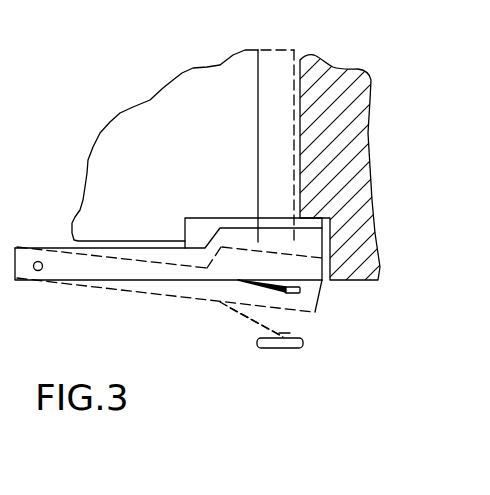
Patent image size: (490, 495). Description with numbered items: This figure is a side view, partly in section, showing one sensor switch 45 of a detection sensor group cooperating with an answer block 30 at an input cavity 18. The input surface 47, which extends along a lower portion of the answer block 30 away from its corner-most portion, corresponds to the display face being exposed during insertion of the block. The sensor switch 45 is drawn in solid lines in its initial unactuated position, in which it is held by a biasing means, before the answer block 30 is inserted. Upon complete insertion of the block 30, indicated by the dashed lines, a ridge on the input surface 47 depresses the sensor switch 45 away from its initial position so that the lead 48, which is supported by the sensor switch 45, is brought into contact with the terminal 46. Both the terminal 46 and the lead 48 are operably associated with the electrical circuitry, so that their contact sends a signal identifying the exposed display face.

The answer block 30 is at (175, 97).
The input cavity 18 is at (292, 87).
The sensor switch 45 is at (312, 238).
The input surface 47 is at (169, 243).
The lead 48 is at (300, 290).
The terminal 46 is at (287, 349).